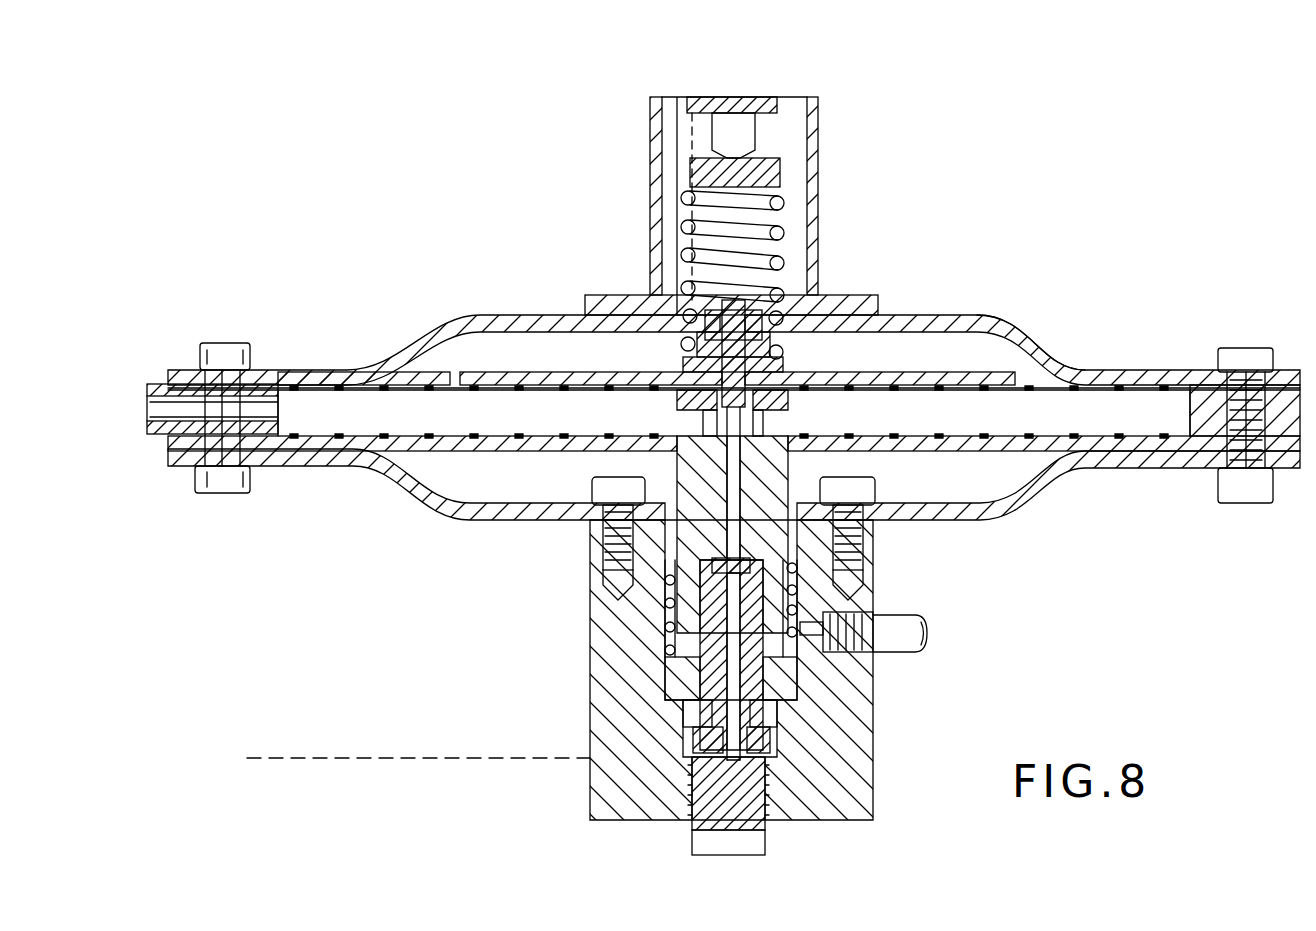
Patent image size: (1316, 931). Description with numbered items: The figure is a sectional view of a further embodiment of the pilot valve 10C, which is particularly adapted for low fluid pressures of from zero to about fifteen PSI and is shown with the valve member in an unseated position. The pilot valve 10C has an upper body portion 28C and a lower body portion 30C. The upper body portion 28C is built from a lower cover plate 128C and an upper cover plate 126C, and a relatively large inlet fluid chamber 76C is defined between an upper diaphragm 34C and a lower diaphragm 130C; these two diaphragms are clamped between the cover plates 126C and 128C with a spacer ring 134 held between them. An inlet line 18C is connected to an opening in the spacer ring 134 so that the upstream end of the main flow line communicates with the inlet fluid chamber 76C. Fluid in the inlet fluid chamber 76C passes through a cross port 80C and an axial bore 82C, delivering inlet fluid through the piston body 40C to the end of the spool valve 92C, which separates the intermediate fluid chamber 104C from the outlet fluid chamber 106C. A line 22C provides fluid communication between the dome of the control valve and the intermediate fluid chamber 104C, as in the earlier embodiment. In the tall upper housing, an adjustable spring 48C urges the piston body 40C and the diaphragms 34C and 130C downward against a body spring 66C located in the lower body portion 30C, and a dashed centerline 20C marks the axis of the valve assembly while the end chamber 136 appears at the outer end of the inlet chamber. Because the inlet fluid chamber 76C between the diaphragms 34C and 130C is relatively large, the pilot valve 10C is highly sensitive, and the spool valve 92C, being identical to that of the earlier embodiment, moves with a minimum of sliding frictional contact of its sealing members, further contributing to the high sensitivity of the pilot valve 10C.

The pilot valve 10C is at (895, 312).
The inlet line 18C is at (178, 465).
The axis line 20C is at (373, 756).
The line 22C is at (880, 632).
The upper body portion 28C is at (1025, 350).
The lower body portion 30C is at (620, 785).
The upper diaphragm 34C is at (412, 383).
The piston body 40C is at (765, 470).
The adjustable spring 48C is at (785, 201).
The body spring 66C is at (665, 605).
The inlet fluid chamber 76C is at (345, 395).
The cross port 80C is at (790, 410).
The axial bore 82C is at (727, 470).
The spool valve 92C is at (690, 690).
The intermediate fluid chamber 104C is at (680, 635).
The outlet fluid chamber 106C is at (700, 722).
The upper cover plate 126C is at (930, 322).
The lower cover plate 128C is at (1080, 472).
The lower diaphragm 130C is at (447, 500).
The spacer ring 134 is at (178, 380).
The end chamber 136 is at (295, 400).